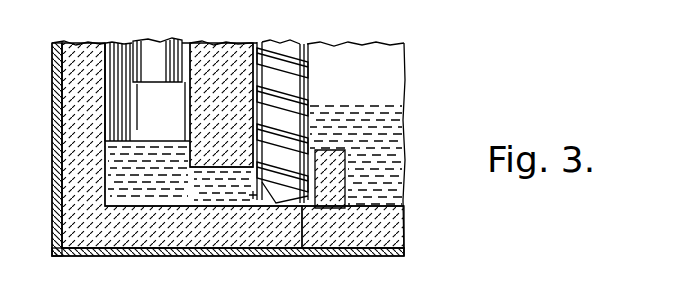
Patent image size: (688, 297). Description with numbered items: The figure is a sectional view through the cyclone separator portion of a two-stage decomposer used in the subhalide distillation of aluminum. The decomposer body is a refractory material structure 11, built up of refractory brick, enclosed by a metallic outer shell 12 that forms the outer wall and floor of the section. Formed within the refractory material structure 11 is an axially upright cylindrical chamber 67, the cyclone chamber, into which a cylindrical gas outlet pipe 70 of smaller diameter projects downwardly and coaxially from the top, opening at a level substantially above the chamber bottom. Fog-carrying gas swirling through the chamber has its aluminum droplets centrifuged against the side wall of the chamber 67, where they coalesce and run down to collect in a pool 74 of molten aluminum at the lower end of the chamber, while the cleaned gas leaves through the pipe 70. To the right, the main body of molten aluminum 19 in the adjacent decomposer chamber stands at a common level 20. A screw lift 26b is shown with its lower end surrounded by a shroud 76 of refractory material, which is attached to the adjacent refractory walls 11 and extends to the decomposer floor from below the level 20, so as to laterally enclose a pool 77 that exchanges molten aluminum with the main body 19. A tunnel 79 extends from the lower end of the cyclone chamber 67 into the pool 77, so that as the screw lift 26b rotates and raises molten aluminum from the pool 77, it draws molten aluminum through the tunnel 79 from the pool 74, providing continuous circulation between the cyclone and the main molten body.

The refractory material structure 11 is at (125, 238).
The metallic outer shell 12 is at (62, 250).
The molten aluminum 19 is at (404, 126).
The common level 20 is at (373, 85).
The screw lift 26b is at (305, 58).
The cylindrical chamber 67 is at (112, 103).
The gas outlet pipe 70 is at (136, 58).
The pool 74 is at (118, 178).
The shroud 76 is at (338, 168).
The pool 77 is at (302, 207).
The tunnel 79 is at (207, 198).